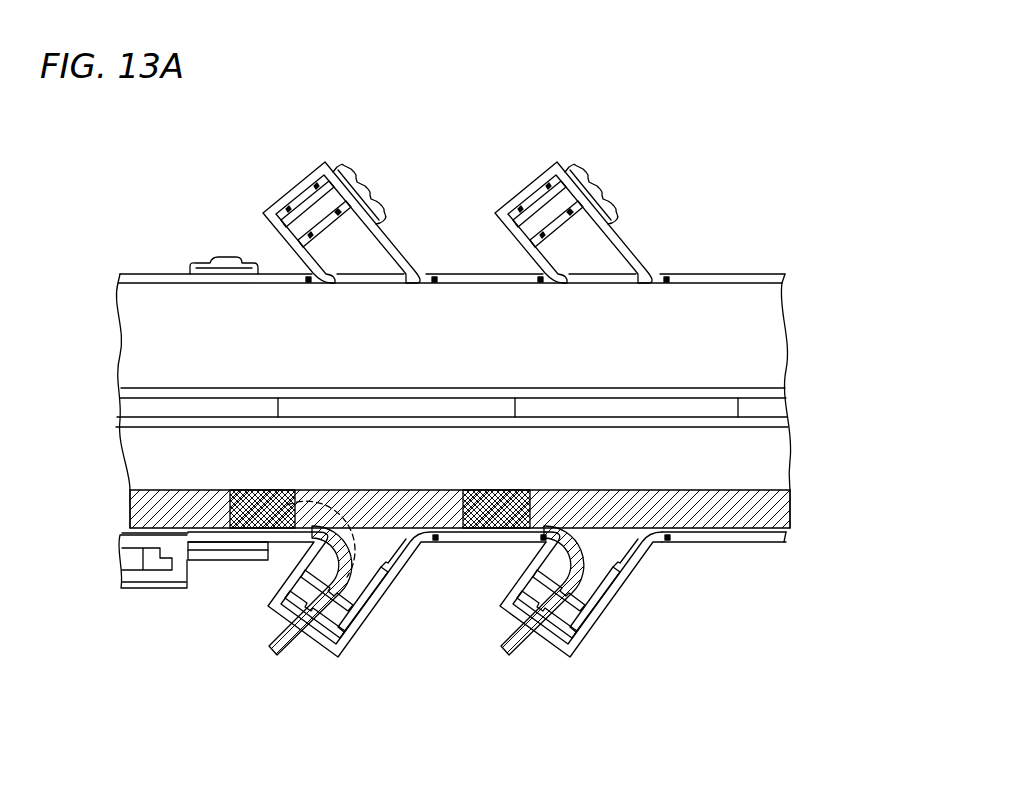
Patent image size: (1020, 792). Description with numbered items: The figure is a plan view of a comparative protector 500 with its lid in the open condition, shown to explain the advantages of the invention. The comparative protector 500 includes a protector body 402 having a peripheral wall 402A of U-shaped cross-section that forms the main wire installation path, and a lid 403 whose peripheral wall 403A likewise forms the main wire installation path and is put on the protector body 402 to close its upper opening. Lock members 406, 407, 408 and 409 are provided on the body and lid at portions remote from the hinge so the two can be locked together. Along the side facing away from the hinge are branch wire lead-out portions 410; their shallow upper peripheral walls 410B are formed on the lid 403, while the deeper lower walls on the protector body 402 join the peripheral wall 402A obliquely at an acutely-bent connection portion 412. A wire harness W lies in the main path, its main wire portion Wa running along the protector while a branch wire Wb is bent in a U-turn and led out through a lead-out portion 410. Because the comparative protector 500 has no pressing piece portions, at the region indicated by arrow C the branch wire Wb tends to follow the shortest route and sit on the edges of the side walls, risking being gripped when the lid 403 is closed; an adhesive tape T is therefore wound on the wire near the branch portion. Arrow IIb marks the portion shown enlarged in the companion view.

The comparative protector 500 is at (730, 228).
The lid 403 is at (769, 272).
The peripheral wall 403A is at (768, 332).
The protector body 402 is at (747, 542).
The peripheral wall 402A is at (768, 457).
The lock member 408 is at (222, 257).
The lock member 409 is at (375, 188).
The peripheral wall 410B is at (327, 162).
The branch wire lead-out portion 410 is at (265, 617).
The lock member 407 is at (363, 635).
The acutely-bent connection portion 412 is at (308, 548).
The lock member 406 is at (205, 572).
The wire harness W is at (128, 508).
The main wire portion Wa is at (130, 535).
The branch wire Wb is at (289, 657).
The adhesive tape T is at (247, 502).
The region indicated by arrow C is at (338, 502).
The arrow IIb is at (343, 672).